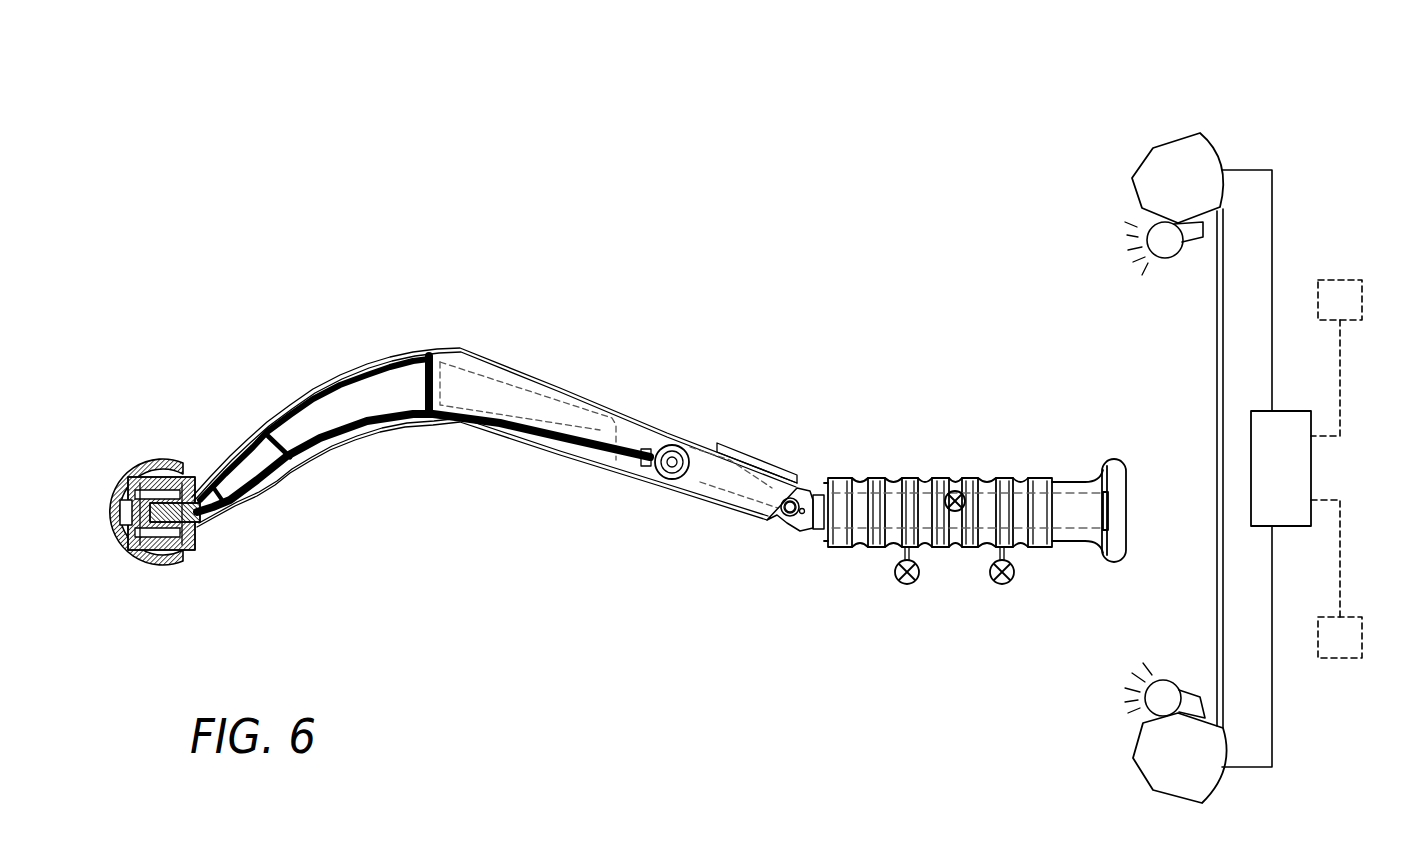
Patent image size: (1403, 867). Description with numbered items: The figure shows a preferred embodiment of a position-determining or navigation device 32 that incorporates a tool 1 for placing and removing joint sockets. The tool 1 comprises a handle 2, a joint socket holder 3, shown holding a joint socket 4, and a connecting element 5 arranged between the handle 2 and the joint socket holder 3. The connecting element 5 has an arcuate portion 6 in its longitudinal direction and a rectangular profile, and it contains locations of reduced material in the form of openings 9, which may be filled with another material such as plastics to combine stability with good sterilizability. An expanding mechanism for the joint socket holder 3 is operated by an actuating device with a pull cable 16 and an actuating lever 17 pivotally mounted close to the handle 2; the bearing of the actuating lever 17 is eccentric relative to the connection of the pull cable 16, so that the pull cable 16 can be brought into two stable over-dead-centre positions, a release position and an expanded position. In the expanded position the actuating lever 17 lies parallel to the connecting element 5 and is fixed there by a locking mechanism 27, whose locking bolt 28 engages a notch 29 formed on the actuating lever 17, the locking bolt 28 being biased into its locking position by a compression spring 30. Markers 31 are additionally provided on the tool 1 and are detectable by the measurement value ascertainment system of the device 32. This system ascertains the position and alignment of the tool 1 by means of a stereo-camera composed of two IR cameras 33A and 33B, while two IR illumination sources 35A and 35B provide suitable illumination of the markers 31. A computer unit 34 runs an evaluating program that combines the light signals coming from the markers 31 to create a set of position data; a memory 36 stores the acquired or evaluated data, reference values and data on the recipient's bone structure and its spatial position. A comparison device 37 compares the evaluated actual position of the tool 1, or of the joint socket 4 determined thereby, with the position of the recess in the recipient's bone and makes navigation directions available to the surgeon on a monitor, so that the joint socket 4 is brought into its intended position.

The tool 1 is at (615, 422).
The handle 2 is at (948, 488).
The joint socket holder 3 is at (167, 454).
The joint socket 4 is at (143, 470).
The connecting element 5 is at (529, 456).
The arcuate portion 6 is at (463, 347).
The openings 9 is at (380, 388).
The pull cable 16 is at (503, 427).
The actuating lever 17 is at (752, 462).
The locking mechanism 27 is at (813, 473).
The locking bolt 28 is at (787, 516).
The notch 29 is at (783, 498).
The compression spring 30 is at (800, 515).
The markers 31 is at (955, 512).
The position-determining or navigation device 32 is at (1114, 431).
The IR camera 33A is at (1142, 165).
The IR camera 33B is at (1140, 740).
The computer unit 34 is at (1295, 527).
The IR illumination source 35A is at (1172, 679).
The IR illumination source 35B is at (1172, 258).
The memory 36 is at (1350, 275).
The comparison device 37 is at (1355, 660).